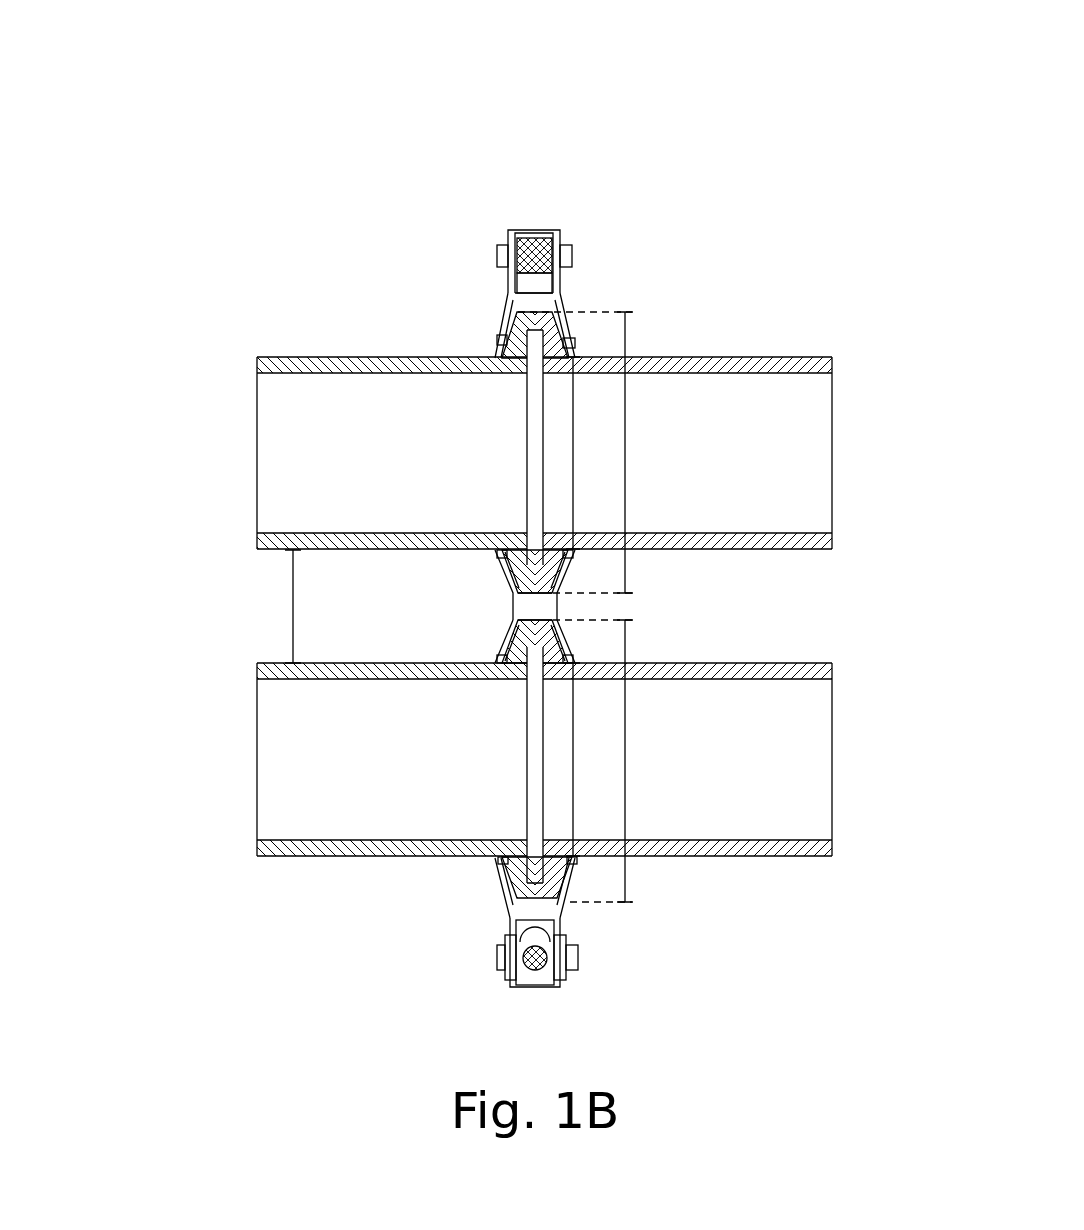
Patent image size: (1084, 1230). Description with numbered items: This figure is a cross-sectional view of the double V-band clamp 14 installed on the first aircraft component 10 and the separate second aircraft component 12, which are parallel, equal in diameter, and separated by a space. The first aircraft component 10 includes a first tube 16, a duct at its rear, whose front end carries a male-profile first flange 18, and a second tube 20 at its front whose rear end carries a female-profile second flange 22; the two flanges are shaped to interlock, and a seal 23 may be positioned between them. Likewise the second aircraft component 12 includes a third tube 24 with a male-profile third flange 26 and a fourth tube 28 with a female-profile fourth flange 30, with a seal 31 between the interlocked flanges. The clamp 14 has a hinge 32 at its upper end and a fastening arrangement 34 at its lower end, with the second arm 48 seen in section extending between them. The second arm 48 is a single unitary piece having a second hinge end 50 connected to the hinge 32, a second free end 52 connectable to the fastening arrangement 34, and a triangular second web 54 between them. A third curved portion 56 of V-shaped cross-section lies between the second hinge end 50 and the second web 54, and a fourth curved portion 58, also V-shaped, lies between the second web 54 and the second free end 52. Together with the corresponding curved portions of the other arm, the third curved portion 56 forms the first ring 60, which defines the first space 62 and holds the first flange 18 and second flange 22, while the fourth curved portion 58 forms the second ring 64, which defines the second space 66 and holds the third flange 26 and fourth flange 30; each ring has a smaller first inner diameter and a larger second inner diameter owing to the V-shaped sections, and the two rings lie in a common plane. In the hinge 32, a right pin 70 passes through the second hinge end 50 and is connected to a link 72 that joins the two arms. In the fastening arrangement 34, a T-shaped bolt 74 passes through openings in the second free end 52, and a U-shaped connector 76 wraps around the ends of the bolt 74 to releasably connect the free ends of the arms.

The first aircraft component 10 is at (197, 398).
The second aircraft component 12 is at (222, 732).
The double V-band clamp 14 is at (605, 98).
The first tube 16 is at (290, 368).
The first flange 18 is at (507, 340).
The second tube 20 is at (803, 367).
The second flange 22 is at (572, 350).
The seal 23 is at (512, 348).
The third tube 24 is at (277, 847).
The third flange 26 is at (497, 650).
The fourth tube 28 is at (823, 843).
The fourth flange 30 is at (570, 652).
The seal 31 is at (562, 880).
The hinge 32 is at (580, 235).
The fastening arrangement 34 is at (587, 987).
The second arm 48 is at (487, 302).
The second hinge end 50 is at (557, 280).
The second free end 52 is at (555, 930).
The second web 54 is at (540, 605).
The third curved portion 56 is at (575, 553).
The fourth curved portion 58 is at (572, 858).
The first ring 60 is at (495, 558).
The first space 62 is at (552, 322).
The second ring 64 is at (497, 645).
The second space 66 is at (510, 895).
The right pin 70 is at (568, 258).
The link 72 is at (533, 248).
The bolt 74 is at (533, 958).
The connector 76 is at (507, 977).